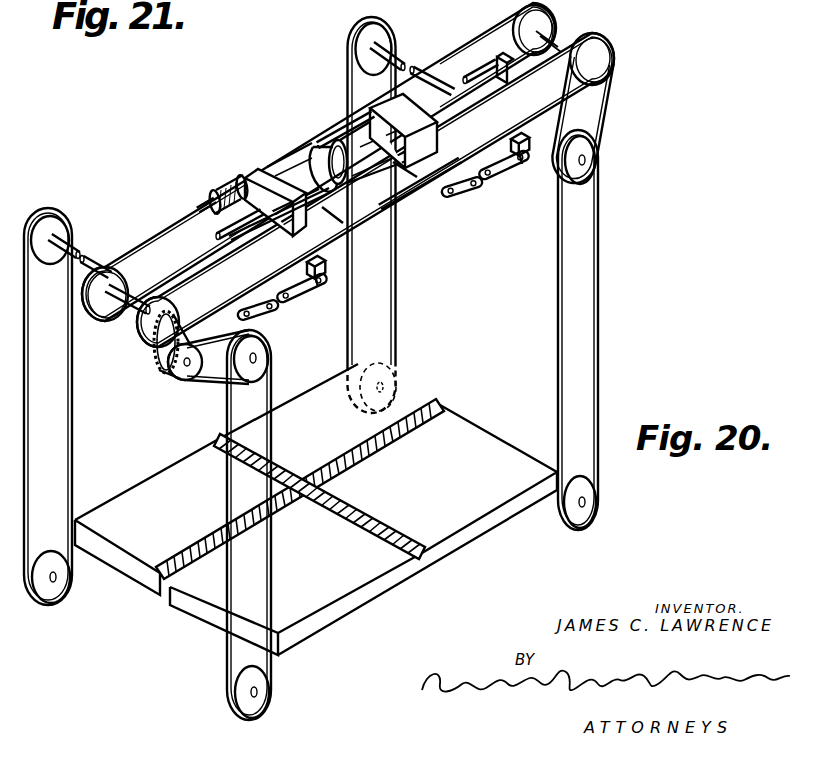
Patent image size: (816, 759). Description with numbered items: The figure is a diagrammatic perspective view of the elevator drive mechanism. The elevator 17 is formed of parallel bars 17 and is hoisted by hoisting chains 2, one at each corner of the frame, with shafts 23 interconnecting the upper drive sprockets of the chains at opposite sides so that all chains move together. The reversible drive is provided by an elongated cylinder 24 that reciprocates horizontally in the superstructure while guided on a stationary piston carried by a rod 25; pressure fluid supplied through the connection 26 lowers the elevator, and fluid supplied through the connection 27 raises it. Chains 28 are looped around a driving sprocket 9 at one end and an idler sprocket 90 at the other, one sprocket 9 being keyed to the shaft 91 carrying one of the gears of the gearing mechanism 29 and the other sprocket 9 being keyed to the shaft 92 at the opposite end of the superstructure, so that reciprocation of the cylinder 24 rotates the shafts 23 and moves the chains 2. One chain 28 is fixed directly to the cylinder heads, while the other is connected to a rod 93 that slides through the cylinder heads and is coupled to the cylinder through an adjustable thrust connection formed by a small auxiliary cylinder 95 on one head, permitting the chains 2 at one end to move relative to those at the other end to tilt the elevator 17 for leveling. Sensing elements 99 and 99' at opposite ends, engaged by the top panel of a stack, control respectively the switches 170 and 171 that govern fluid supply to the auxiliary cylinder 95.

The elevator hoisting chain 2 is at (72, 432).
The sprocket 9 is at (178, 303).
The elevator platform bar 17 is at (331, 440).
The shaft 23 is at (97, 258).
The cylinder 24 is at (308, 188).
The rod 25 is at (242, 230).
The connection 26 is at (334, 219).
The connection 27 is at (411, 170).
The chain 28 is at (164, 230).
The gearing mechanism 29 is at (160, 345).
The sprocket 90 is at (103, 313).
The shaft 91 is at (129, 305).
The shaft 92 is at (560, 33).
The rod 93 is at (297, 154).
The auxiliary cylinder 95 is at (226, 186).
The sensing element 99 is at (282, 303).
The sensing element 99' is at (485, 180).
The switch 170 is at (319, 272).
The switch 171 is at (521, 143).